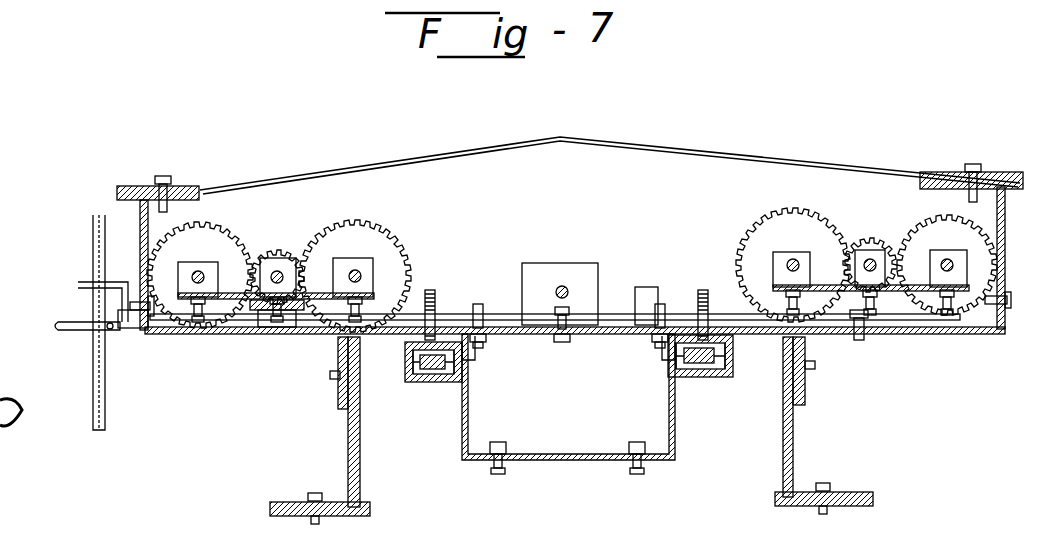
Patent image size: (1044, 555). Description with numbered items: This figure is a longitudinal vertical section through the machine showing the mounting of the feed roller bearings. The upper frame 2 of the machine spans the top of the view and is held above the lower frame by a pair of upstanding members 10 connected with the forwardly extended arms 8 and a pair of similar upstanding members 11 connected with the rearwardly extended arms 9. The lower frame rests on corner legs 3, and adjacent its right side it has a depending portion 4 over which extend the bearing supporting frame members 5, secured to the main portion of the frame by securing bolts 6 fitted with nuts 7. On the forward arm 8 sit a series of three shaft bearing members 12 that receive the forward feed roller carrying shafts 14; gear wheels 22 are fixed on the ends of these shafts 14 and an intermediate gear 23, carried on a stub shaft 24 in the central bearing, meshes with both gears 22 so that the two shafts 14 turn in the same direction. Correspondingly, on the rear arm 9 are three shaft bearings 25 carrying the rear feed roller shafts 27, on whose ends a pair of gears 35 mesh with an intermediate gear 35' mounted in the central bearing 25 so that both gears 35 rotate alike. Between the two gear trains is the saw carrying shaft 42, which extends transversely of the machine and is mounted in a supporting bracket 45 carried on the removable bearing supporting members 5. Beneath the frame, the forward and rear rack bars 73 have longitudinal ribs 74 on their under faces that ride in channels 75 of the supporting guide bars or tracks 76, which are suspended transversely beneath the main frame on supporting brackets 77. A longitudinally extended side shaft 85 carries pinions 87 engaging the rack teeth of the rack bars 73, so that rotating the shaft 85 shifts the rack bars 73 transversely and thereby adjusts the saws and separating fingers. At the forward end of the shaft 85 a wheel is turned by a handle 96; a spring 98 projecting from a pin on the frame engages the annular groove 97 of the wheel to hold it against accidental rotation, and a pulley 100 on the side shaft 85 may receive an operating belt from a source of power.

The upper frame 2 is at (335, 166).
The corner legs 3 is at (348, 447).
The depending portion 4 is at (668, 420).
The bearing supporting frame members 5 is at (506, 336).
The securing bolts 6 is at (477, 354).
The nuts 7 is at (481, 324).
The forwardly extended arms 8 is at (264, 332).
The rearwardly extended arms 9 is at (860, 332).
The upstanding members 10 is at (150, 258).
The upstanding members 11 is at (1005, 256).
The shaft bearing members 12 is at (360, 262).
The forward feed roller carrying shafts 14 is at (375, 280).
The gear wheels 22 is at (378, 232).
The intermediate gear 23 is at (277, 257).
The stub shaft 24 is at (281, 270).
The shaft bearings 25 is at (808, 262).
The rear feed roller shafts 27 is at (793, 260).
The gears 35 is at (866, 229).
The intermediate gear 35' is at (870, 250).
The saw carrying shaft 42 is at (563, 287).
The supporting bracket 45 is at (533, 268).
The rack bars 73 is at (412, 382).
The longitudinal ribs 74 is at (468, 387).
The channels 75 is at (452, 388).
The supporting guide bars or tracks 76 is at (400, 372).
The supporting brackets 77 is at (440, 382).
The longitudinal side shafts 85 is at (626, 322).
The pinions 87 is at (436, 300).
The handle 96 is at (70, 332).
The annular groove 97 is at (92, 252).
The spring 98 is at (78, 285).
The pulleys 100 is at (647, 287).